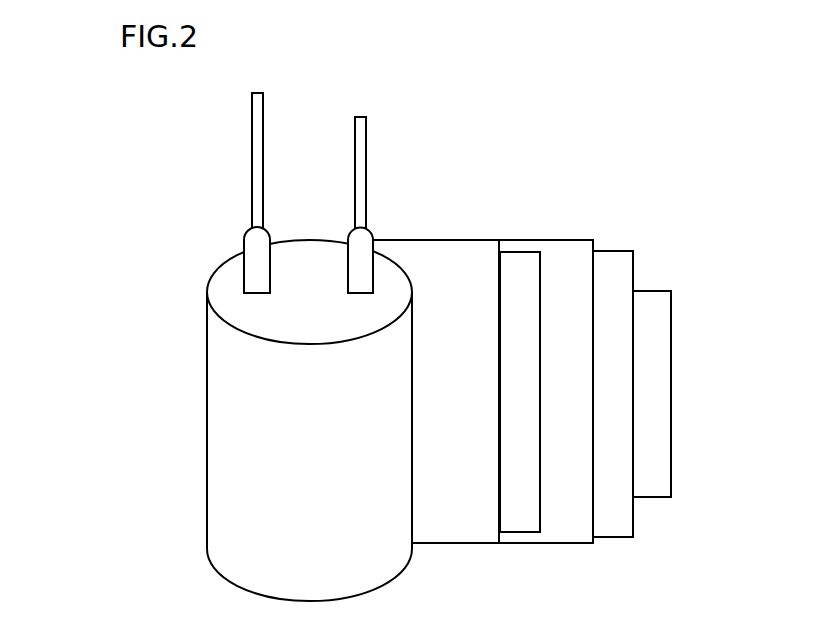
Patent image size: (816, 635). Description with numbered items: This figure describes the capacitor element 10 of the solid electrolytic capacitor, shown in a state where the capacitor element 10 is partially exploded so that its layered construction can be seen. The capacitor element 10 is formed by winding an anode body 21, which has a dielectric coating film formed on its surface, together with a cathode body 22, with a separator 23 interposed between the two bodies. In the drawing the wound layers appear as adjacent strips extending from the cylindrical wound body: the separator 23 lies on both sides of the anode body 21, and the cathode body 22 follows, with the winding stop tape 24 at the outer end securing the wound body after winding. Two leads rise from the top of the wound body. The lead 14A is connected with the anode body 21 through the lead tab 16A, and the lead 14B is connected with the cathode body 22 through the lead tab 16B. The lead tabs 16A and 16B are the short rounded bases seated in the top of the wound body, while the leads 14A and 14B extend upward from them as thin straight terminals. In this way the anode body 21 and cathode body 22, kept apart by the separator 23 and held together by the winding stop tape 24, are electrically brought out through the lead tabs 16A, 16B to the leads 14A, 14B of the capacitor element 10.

The capacitor element 10 is at (358, 79).
The lead 14A is at (256, 131).
The lead 14B is at (361, 129).
The lead tab 16A is at (258, 248).
The lead tab 16B is at (362, 246).
The anode body 21 is at (530, 513).
The cathode body 22 is at (620, 512).
The separator 23 is at (467, 513).
The winding stop tape 24 is at (653, 478).